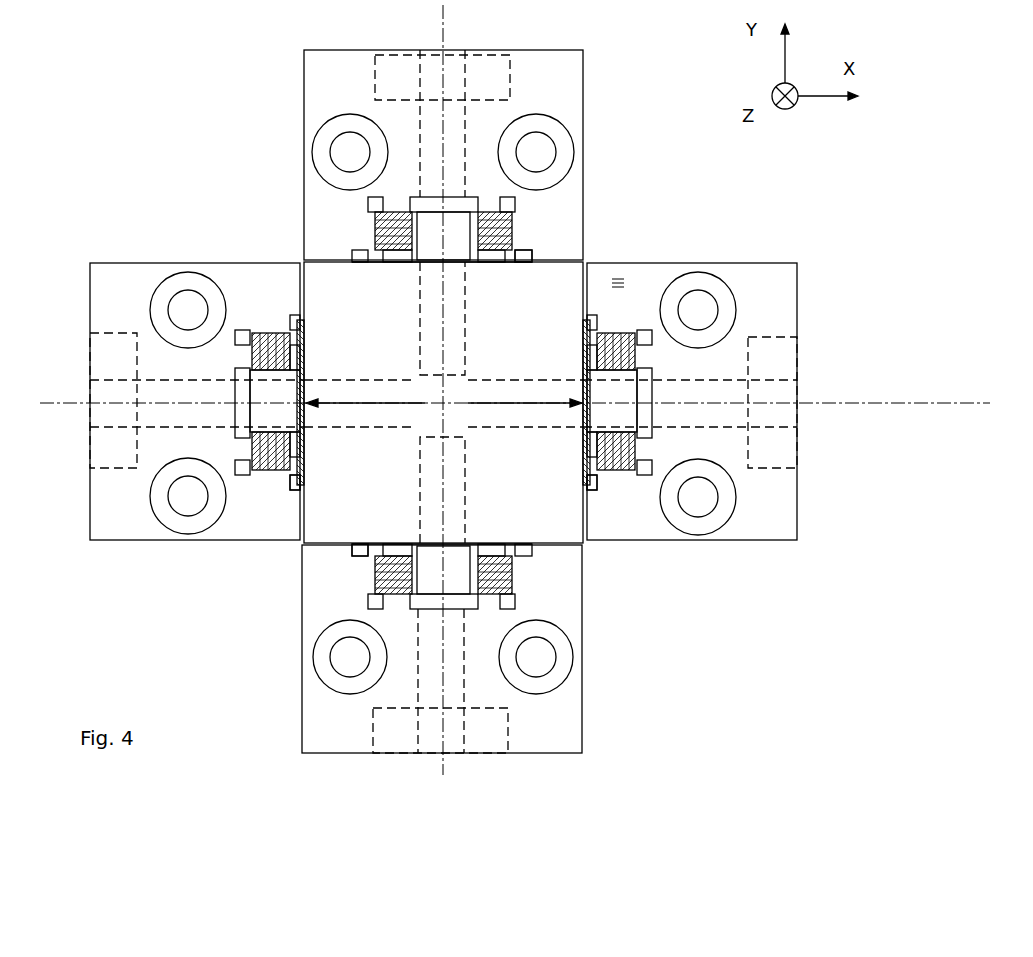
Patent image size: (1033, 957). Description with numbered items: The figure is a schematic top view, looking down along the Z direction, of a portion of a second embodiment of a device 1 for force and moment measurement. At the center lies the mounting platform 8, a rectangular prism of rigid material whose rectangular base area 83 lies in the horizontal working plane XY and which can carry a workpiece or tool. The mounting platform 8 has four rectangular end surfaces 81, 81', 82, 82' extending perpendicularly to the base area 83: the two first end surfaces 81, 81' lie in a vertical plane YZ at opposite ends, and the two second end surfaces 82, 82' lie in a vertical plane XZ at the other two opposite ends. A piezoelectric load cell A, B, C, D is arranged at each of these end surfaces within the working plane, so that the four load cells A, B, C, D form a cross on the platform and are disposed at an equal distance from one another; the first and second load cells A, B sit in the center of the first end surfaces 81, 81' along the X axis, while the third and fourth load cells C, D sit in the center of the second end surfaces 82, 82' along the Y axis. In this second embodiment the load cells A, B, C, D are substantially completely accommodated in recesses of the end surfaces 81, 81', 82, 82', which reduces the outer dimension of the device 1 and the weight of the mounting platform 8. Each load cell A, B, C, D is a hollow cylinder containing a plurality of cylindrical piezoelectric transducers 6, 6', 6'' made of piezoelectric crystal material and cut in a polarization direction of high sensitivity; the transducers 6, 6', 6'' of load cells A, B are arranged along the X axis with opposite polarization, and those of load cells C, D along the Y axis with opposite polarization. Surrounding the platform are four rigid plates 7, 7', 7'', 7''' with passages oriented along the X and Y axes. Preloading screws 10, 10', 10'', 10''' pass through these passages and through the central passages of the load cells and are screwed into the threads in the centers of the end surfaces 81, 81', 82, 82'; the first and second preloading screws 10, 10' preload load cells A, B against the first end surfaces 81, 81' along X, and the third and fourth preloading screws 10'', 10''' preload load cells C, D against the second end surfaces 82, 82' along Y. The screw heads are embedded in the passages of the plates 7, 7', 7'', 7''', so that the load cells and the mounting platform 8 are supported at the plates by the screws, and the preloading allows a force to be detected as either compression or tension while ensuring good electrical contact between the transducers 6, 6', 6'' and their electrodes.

The device for force and moment measurement 1 is at (170, 141).
The piezoelectric transducer 6 is at (436, 403).
The piezoelectric transducer 6' is at (271, 401).
The piezoelectric transducer 6'' is at (267, 403).
The first piezoelectric load cell A is at (248, 355).
The second piezoelectric load cell B is at (617, 468).
The third piezoelectric load cell C is at (510, 240).
The fourth piezoelectric load cell D is at (372, 567).
The plate 7 is at (440, 132).
The plate 7' is at (154, 383).
The plate 7'' is at (447, 676).
The plate 7''' is at (736, 435).
The mounting platform 8 is at (366, 340).
The first preloading screw 10 is at (510, 77).
The second preloading screw 10' is at (70, 389).
The third preloading screw 10'' is at (370, 732).
The fourth preloading screw 10''' is at (818, 422).
The first end surface 81 is at (319, 480).
The first end surface 81' is at (566, 511).
The second end surface 82 is at (548, 283).
The second end surface 82' is at (359, 523).
The base area 83 is at (537, 469).